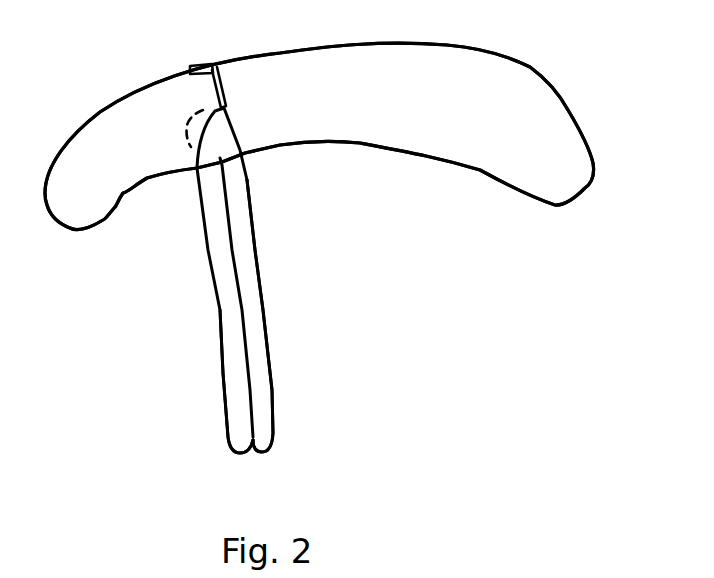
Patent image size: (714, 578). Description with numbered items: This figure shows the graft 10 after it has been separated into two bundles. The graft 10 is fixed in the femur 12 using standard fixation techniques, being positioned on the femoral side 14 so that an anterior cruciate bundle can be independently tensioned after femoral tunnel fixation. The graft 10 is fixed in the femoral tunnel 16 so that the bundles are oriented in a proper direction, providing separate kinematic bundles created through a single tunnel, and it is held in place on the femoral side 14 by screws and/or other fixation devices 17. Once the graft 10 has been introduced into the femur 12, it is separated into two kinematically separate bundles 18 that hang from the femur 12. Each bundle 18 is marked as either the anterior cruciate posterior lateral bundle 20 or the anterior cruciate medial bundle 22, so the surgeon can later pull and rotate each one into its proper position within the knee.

The graft 10 is at (222, 145).
The femur 12 is at (482, 62).
The femoral side 14 is at (413, 103).
The femoral tunnel 16 is at (230, 104).
The fixation devices 17 is at (218, 62).
The bundles 18 is at (220, 260).
The anterior cruciate posterior lateral bundle 20 is at (255, 337).
The anterior cruciate medial bundle 22 is at (237, 378).